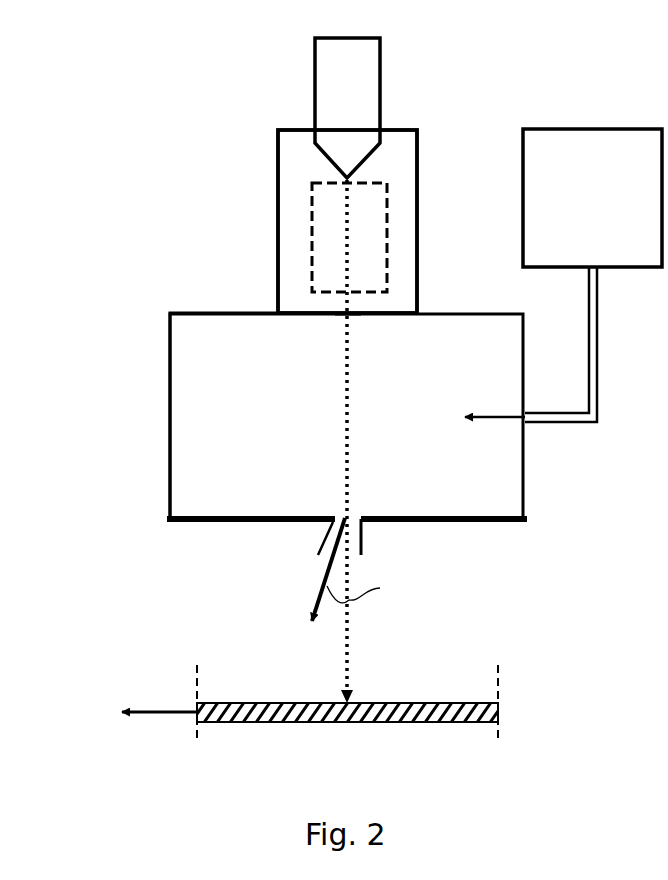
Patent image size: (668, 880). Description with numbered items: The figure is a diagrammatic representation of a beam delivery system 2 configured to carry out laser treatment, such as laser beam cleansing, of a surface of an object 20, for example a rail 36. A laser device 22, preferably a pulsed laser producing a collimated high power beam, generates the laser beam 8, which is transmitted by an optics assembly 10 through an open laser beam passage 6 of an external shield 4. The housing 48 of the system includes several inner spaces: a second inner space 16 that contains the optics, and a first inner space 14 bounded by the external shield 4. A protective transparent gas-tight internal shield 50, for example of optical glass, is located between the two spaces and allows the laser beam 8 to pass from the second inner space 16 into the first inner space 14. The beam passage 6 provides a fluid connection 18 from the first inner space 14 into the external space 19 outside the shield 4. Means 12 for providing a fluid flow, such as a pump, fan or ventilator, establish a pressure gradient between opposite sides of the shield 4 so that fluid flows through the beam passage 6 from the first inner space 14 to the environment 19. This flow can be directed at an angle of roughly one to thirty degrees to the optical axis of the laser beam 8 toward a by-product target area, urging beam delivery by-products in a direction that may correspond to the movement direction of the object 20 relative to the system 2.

The beam delivery system 2 is at (216, 136).
The housing 48 is at (238, 249).
The second inner space 16 is at (347, 221).
The laser device 22 is at (347, 108).
The optics assembly 10 is at (312, 238).
The means for providing a fluid flow 12 is at (549, 277).
The first inner space 14 is at (347, 416).
The protective transparent gas-tight internal shield 50 is at (340, 327).
The laser beam passage 6 is at (300, 537).
The fluid connection 18 is at (333, 498).
The shield 4 is at (455, 522).
The external space 19 is at (393, 606).
The laser beam 8 is at (349, 653).
The rail 36 is at (500, 713).
The object 20 is at (273, 716).